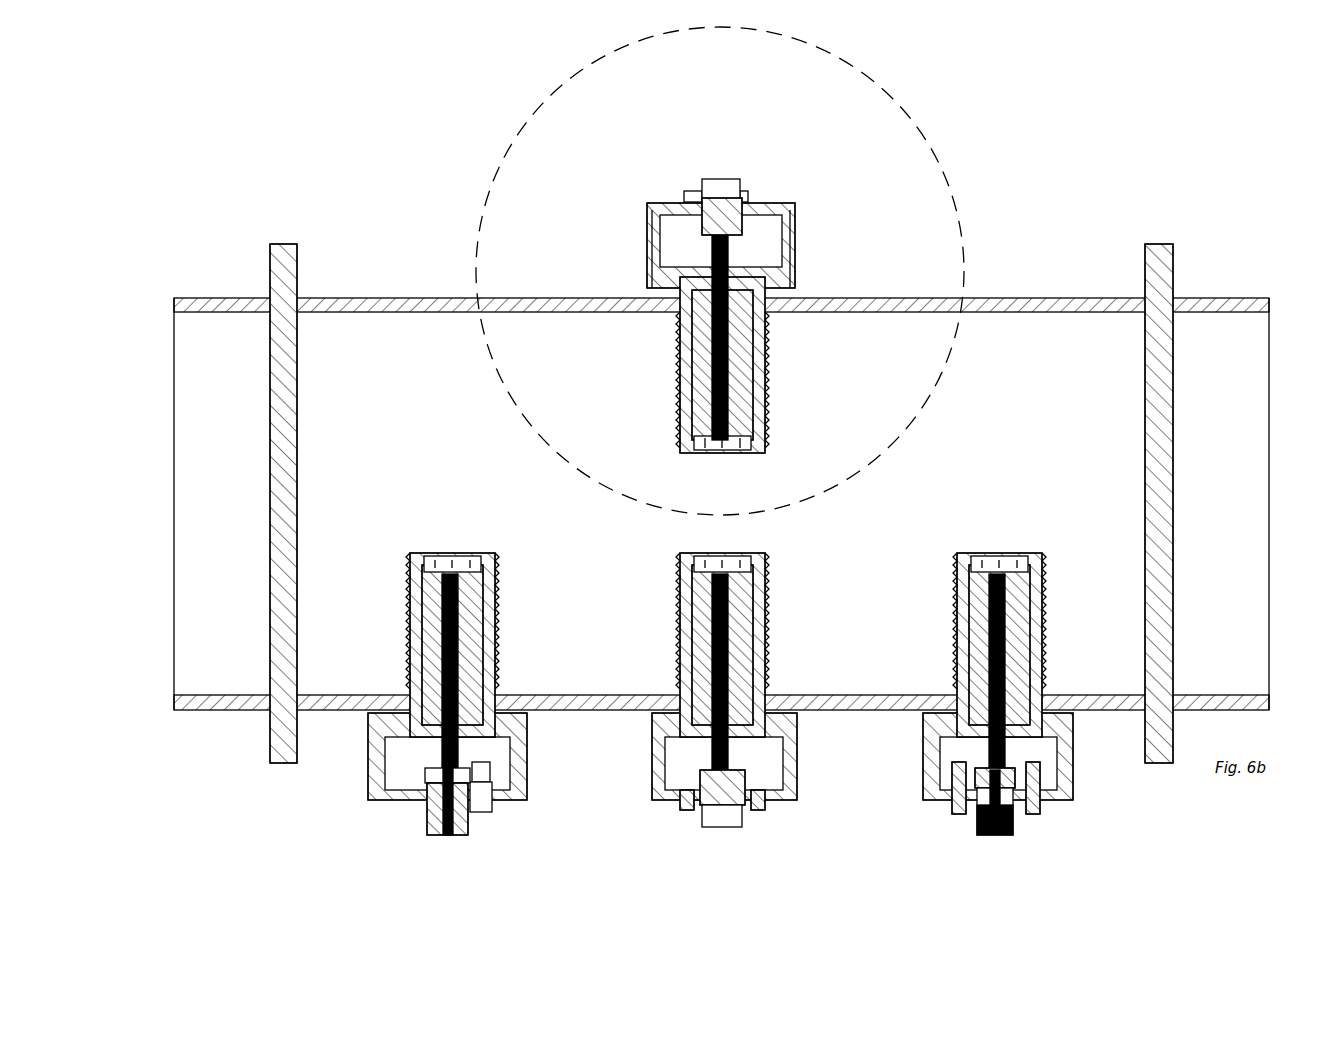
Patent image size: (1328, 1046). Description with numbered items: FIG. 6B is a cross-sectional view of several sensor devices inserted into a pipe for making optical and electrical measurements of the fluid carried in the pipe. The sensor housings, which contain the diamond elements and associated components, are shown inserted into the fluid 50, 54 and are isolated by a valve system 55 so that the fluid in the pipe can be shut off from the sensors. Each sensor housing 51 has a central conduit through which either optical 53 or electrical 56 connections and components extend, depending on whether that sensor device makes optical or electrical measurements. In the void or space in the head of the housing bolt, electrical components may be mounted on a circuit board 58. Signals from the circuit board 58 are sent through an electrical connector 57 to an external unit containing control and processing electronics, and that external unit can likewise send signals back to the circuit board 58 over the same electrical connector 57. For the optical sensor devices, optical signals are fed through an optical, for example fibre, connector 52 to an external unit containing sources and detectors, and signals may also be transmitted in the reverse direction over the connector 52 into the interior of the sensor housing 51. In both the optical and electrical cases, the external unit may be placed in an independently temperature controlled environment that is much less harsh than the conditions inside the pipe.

The fluid 50 is at (388, 405).
The actuator housing 51 is at (633, 222).
The optical connector 52 is at (722, 187).
The optical connections 53 is at (730, 383).
The fluid 54 is at (920, 445).
The valve system 55 is at (1160, 470).
The electrical connections 56 is at (437, 673).
The electrical connector 57 is at (432, 828).
The circuit board 58 is at (977, 783).